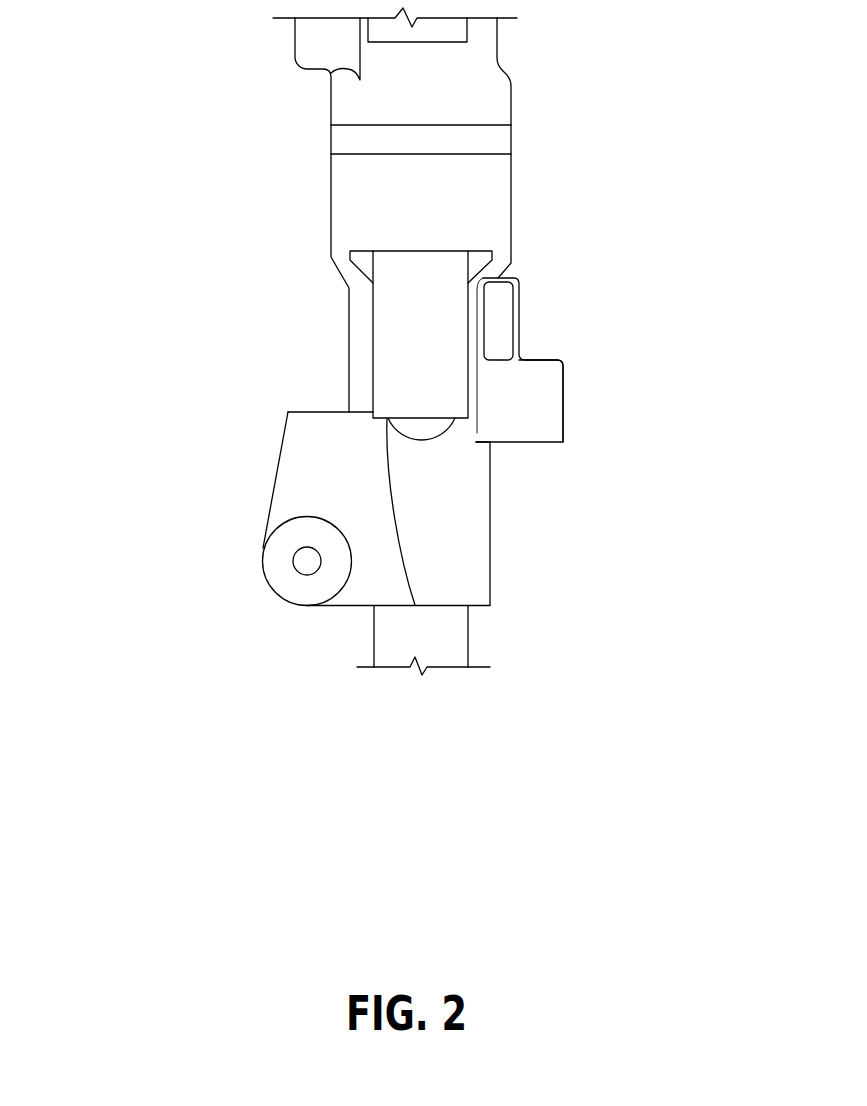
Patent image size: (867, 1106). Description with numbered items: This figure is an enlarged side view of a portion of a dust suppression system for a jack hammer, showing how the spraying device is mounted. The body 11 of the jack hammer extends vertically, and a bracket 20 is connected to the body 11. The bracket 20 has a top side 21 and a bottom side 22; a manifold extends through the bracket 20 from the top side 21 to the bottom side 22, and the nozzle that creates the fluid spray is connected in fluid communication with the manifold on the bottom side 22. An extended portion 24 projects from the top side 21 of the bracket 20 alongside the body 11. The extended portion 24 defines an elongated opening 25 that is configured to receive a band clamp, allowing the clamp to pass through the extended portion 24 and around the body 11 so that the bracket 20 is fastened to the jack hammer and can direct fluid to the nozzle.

The body 11 is at (347, 363).
The bracket 20 is at (548, 418).
The top side 21 is at (548, 357).
The bottom side 22 is at (518, 443).
The extended portion 24 is at (515, 280).
The elongated opening 25 is at (498, 320).